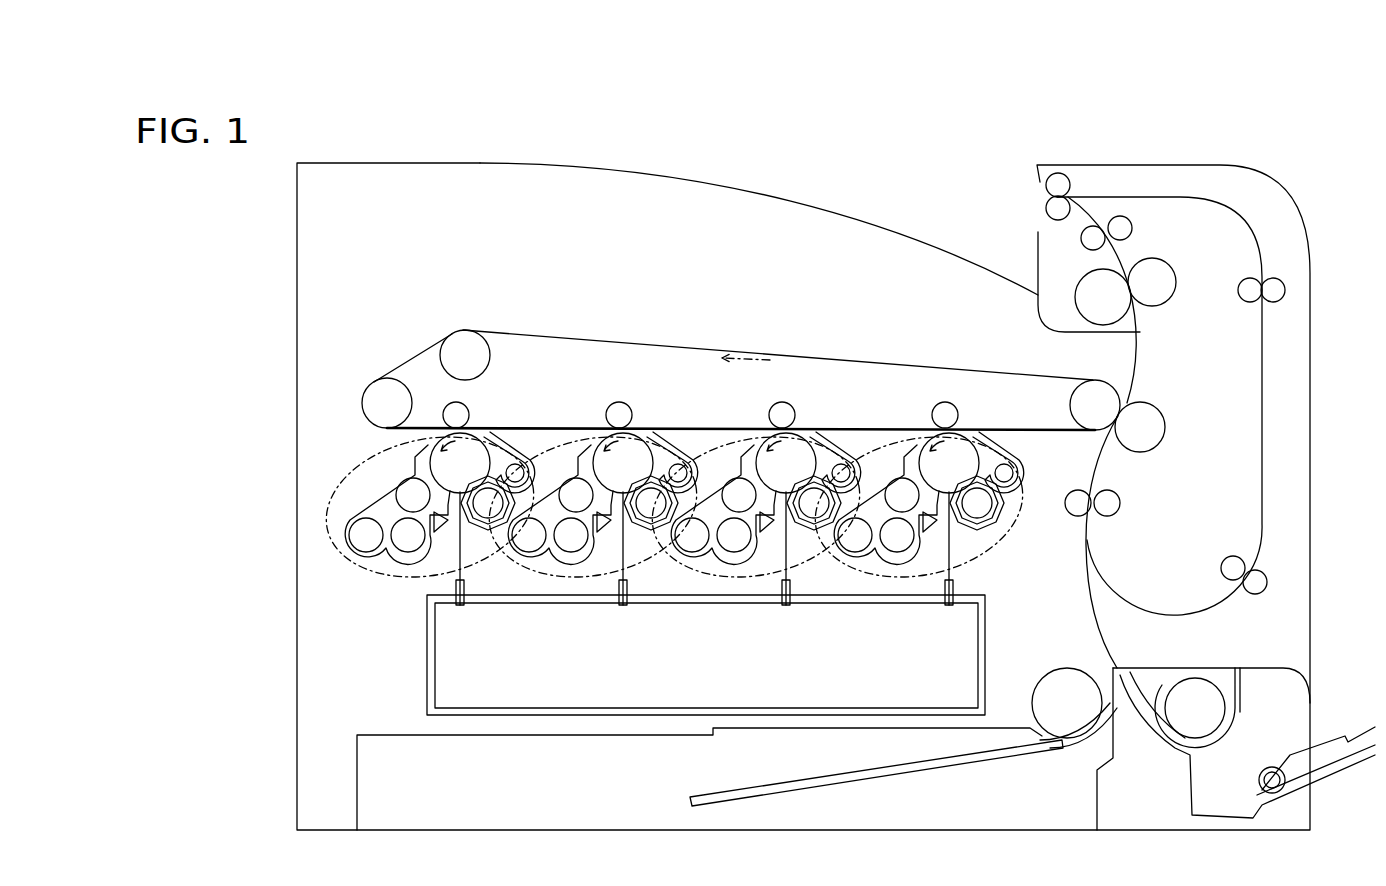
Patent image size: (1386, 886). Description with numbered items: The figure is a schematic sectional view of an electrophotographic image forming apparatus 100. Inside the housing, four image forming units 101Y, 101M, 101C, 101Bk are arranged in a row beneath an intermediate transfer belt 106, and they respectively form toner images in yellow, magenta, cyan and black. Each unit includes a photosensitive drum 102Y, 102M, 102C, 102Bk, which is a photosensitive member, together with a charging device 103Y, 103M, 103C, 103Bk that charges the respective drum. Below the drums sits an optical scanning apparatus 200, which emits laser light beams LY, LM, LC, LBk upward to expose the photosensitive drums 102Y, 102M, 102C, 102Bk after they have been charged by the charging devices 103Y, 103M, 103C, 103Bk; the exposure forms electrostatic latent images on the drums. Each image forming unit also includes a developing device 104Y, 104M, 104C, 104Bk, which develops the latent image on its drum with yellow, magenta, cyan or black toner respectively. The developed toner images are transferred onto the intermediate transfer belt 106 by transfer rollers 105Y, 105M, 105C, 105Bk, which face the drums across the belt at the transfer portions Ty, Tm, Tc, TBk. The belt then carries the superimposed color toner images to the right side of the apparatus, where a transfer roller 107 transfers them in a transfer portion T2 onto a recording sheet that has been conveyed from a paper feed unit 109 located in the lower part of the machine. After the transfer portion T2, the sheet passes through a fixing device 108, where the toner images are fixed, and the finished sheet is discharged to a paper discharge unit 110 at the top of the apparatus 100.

The image forming apparatus 100 is at (1132, 137).
The paper discharge unit 110 is at (877, 225).
The intermediate transfer belt 106 is at (692, 343).
The transfer roller 107 is at (1165, 425).
The transfer portion T2 is at (1128, 405).
The fixing device 108 is at (1177, 278).
The paper feed unit 109 is at (940, 770).
The optical scanning apparatus 200 is at (428, 685).
The photosensitive drum 102Y is at (430, 453).
The photosensitive drum 102M is at (647, 434).
The photosensitive drum 102C is at (806, 407).
The photosensitive drum 102Bk is at (982, 446).
The image forming unit 101Y is at (343, 553).
The image forming unit 101M is at (546, 550).
The image forming unit 101C is at (775, 467).
The image forming unit 101Bk is at (962, 500).
The charging device 103Y is at (462, 532).
The charging device 103M is at (651, 541).
The charging device 103C is at (819, 539).
The charging device 103Bk is at (1010, 501).
The developing device 104Y is at (336, 500).
The developing device 104M is at (593, 554).
The developing device 104C is at (756, 532).
The developing device 104Bk is at (919, 532).
The transfer roller 105Y is at (451, 404).
The transfer roller 105M is at (607, 387).
The transfer roller 105C is at (773, 359).
The transfer roller 105Bk is at (952, 380).
The light beam LY is at (457, 607).
The light beam LM is at (598, 571).
The light beam LC is at (765, 574).
The light beam LBk is at (941, 571).
The transfer portion Ty is at (472, 428).
The transfer portion Tm is at (584, 413).
The transfer portion Tc is at (750, 413).
The transfer portion TBk is at (907, 413).